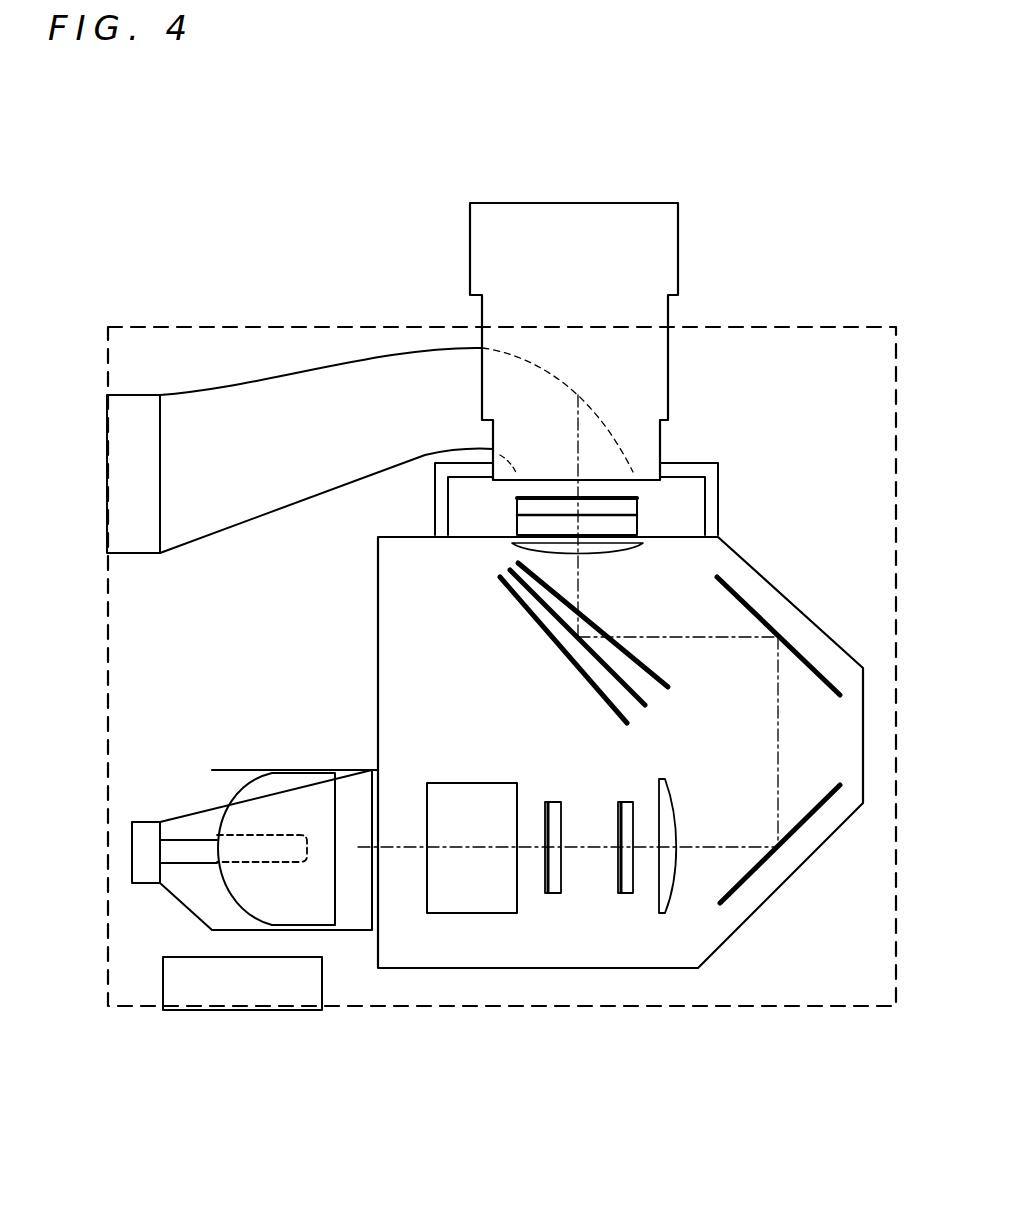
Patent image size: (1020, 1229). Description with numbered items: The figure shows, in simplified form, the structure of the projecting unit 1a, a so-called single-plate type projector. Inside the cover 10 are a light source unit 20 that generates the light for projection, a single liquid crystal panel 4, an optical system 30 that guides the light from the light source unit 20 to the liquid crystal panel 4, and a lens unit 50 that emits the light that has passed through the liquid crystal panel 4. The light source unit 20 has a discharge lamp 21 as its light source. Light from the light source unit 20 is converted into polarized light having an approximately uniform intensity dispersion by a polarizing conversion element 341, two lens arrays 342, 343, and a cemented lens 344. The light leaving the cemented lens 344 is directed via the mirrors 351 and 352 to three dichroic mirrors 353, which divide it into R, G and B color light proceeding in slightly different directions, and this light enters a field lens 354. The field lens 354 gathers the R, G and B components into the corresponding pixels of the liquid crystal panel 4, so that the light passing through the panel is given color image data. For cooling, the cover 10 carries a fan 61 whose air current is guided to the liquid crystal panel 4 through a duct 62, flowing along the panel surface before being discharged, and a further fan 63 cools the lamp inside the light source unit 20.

The projecting unit 1a is at (168, 139).
The cover 10 is at (333, 324).
The lens unit 50 is at (680, 248).
The liquid crystal panel 4 is at (637, 505).
The optical system 30 is at (487, 688).
The field lens 354 is at (610, 556).
The mirror 352 is at (745, 600).
The dichroic mirror 353 is at (668, 688).
The polarizing conversion element 341 is at (460, 783).
The lens array 342 is at (555, 802).
The lens array 343 is at (625, 802).
The cemented lens 344 is at (661, 912).
The mirror 351 is at (750, 875).
The light source unit 20 is at (183, 797).
The discharge lamp 21 is at (277, 835).
The fan 61 is at (105, 475).
The duct 62 is at (287, 505).
The fan 63 is at (282, 1010).